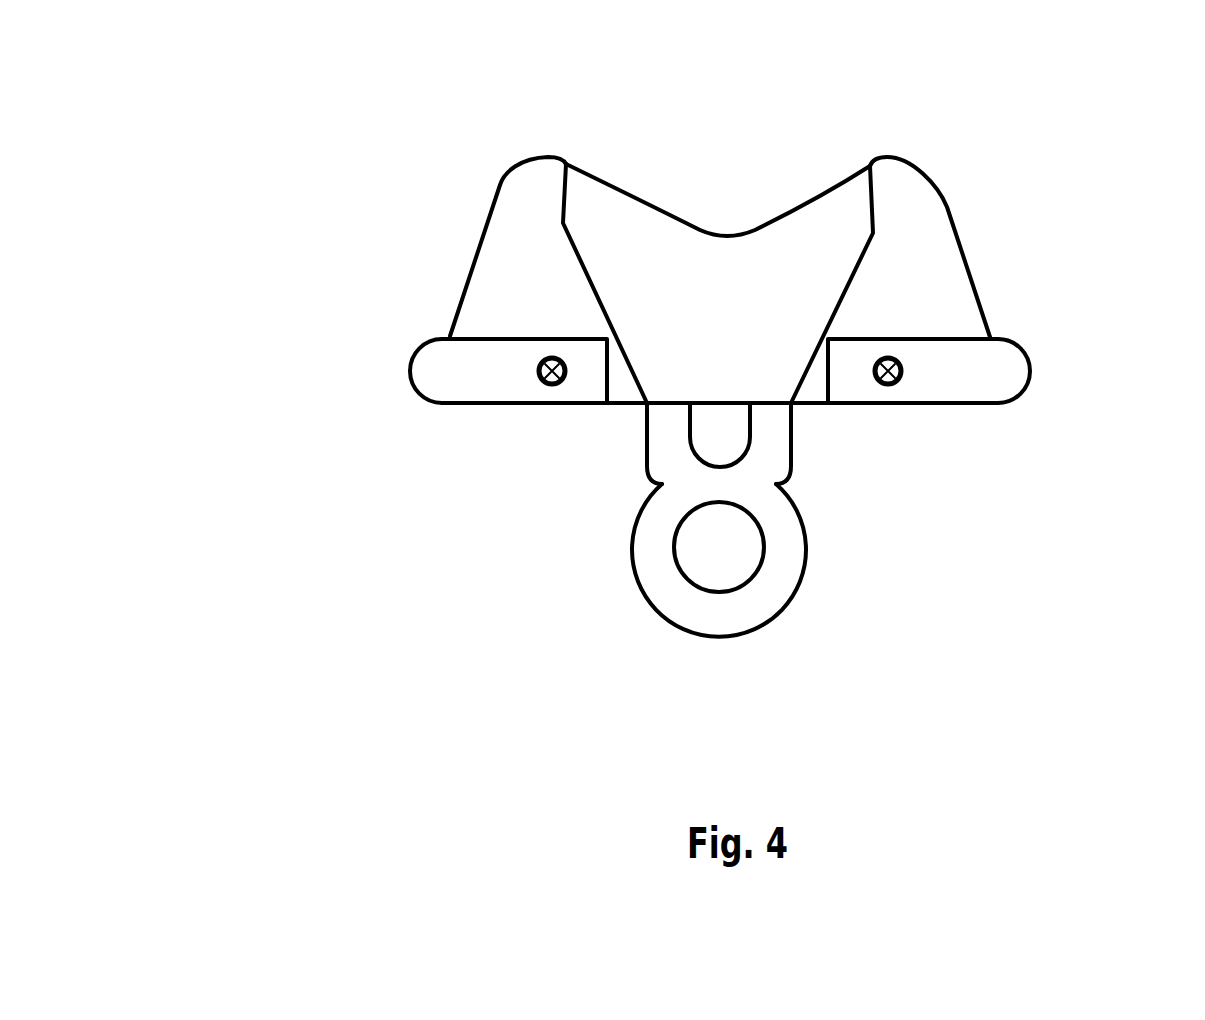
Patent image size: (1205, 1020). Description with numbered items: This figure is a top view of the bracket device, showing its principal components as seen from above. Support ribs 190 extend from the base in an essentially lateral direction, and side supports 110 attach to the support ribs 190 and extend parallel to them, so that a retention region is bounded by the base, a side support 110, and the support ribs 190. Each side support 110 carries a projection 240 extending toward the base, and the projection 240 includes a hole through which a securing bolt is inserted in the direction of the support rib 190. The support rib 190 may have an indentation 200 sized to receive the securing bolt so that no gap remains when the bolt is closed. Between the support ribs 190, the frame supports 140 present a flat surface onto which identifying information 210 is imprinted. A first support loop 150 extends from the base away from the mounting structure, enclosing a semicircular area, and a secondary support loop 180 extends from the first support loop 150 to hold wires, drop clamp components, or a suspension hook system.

The side support 110 is at (430, 382).
The frame support 140 is at (583, 203).
The first support loop 150 is at (775, 452).
The secondary support loop 180 is at (775, 577).
The support rib 190 is at (497, 257).
The indentation 200 is at (541, 378).
The identifying information 210 is at (707, 250).
The projection 240 is at (497, 367).